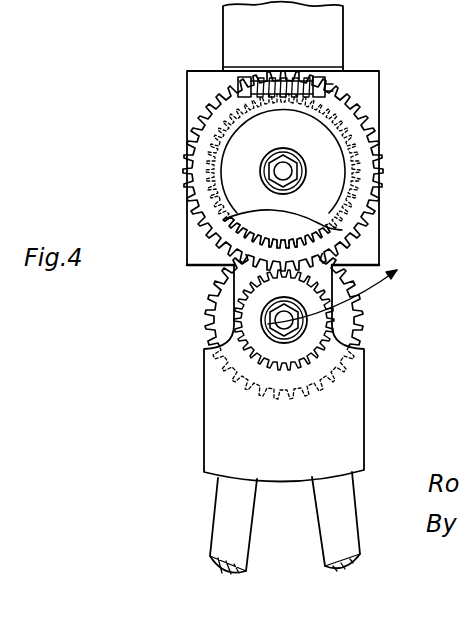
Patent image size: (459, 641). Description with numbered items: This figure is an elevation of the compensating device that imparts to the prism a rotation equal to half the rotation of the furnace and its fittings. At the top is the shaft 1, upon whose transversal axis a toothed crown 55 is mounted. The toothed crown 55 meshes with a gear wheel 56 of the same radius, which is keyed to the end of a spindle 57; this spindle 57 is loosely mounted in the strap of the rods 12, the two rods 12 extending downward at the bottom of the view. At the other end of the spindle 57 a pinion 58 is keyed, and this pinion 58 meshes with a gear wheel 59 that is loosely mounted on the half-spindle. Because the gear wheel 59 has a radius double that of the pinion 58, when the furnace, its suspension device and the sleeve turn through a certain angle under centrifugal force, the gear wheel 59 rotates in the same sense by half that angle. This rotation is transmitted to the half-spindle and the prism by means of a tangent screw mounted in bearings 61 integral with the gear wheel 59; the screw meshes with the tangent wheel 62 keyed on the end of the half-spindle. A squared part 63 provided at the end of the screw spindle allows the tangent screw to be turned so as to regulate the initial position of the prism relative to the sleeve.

The shaft 1 is at (335, 23).
The rods 12 is at (222, 507).
The toothed crown 55 is at (320, 237).
The gear wheel 56 is at (363, 324).
The spindle 57 is at (283, 322).
The pinion 58 is at (242, 316).
The gear wheel 59 is at (380, 112).
The bearings 61 is at (238, 94).
The tangent wheel 62 is at (217, 138).
The squared part 63 is at (348, 99).